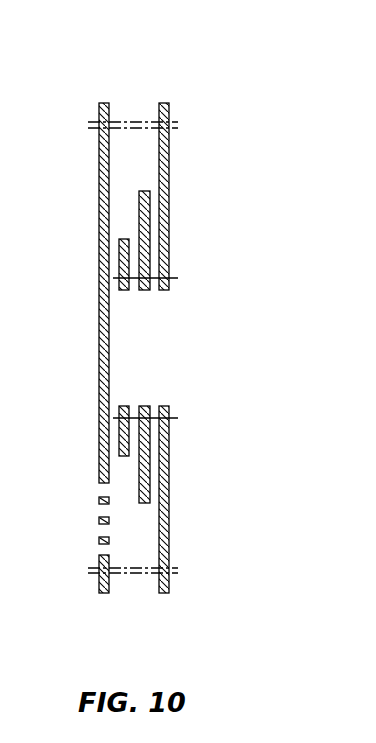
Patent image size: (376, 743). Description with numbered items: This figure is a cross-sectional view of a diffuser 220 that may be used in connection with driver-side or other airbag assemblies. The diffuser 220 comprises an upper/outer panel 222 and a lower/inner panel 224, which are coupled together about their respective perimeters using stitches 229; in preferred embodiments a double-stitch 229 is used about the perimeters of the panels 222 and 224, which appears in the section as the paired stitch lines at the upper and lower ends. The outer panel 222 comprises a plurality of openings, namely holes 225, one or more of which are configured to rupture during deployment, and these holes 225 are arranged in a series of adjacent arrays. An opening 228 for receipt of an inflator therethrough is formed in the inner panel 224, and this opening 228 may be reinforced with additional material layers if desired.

The diffuser 220 is at (115, 321).
The upper/outer panel 222 is at (98, 456).
The lower/inner panel 224 is at (170, 537).
The holes 225 is at (87, 548).
The opening 228 is at (162, 290).
The stitches 229 is at (132, 125).